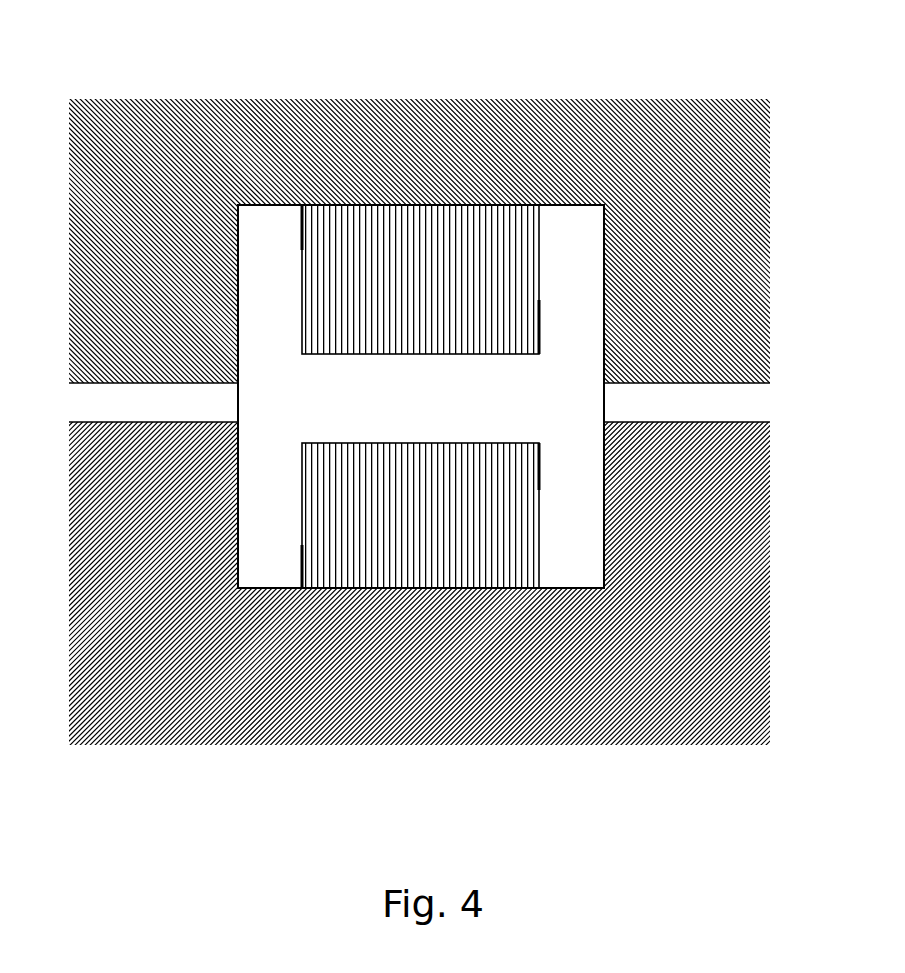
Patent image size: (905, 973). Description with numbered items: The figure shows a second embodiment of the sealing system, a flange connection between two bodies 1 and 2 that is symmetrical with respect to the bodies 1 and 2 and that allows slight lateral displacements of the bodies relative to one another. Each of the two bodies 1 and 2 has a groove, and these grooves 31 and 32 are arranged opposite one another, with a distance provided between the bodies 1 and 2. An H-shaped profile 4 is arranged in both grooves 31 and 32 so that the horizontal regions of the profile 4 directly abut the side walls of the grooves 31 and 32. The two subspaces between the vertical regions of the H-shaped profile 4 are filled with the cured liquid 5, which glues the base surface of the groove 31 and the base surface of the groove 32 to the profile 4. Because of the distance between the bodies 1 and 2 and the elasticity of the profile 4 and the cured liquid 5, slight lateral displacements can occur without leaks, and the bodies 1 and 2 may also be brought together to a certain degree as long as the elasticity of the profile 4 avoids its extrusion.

The body 1 is at (700, 713).
The body 2 is at (678, 138).
The H-shaped profile 4 is at (253, 481).
The cured liquid 5 is at (441, 235).
The groove 31 is at (323, 588).
The groove 32 is at (330, 205).